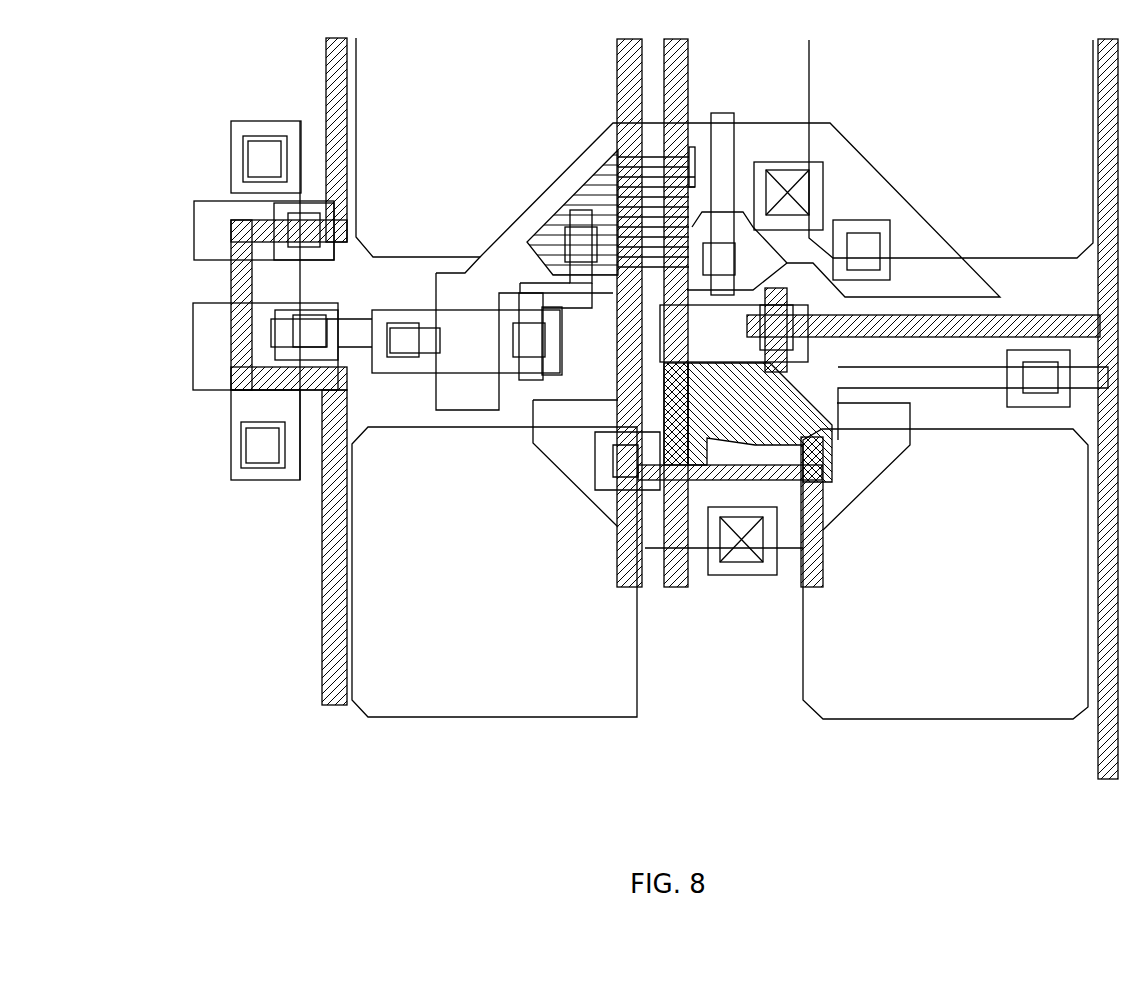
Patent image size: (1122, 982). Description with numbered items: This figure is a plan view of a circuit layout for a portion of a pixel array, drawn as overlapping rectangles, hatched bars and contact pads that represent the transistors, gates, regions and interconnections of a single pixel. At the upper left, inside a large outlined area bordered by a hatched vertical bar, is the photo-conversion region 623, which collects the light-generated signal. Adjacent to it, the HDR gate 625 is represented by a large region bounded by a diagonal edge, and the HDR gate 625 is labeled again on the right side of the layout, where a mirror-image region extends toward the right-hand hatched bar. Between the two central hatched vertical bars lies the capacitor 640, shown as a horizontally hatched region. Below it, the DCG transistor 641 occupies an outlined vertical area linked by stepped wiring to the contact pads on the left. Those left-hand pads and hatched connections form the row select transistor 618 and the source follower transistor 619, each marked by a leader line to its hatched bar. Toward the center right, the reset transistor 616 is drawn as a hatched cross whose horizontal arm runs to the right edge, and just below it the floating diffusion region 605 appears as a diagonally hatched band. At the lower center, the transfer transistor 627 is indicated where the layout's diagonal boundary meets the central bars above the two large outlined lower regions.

The floating diffusion region 605 is at (723, 383).
The reset transistor 616 is at (808, 300).
The row select transistor 618 is at (220, 262).
The source follower transistor 619 is at (200, 390).
The photo-conversion region 623 is at (506, 76).
The HDR gate 625 is at (527, 210).
The transfer transistor 627 is at (612, 523).
The capacitor 640 is at (590, 172).
The DCG transistor 641 is at (455, 410).